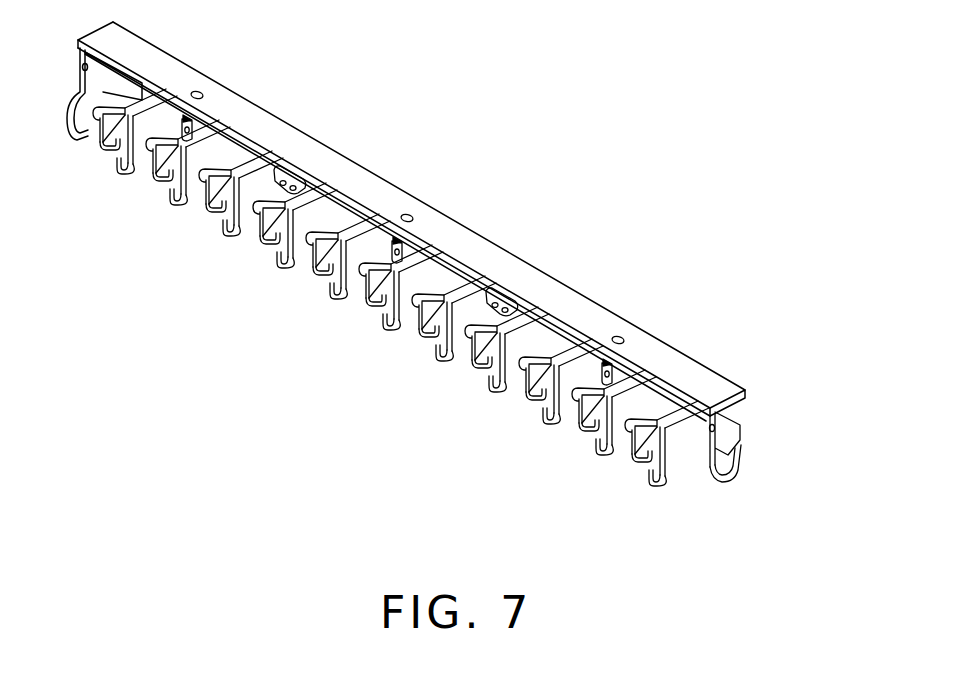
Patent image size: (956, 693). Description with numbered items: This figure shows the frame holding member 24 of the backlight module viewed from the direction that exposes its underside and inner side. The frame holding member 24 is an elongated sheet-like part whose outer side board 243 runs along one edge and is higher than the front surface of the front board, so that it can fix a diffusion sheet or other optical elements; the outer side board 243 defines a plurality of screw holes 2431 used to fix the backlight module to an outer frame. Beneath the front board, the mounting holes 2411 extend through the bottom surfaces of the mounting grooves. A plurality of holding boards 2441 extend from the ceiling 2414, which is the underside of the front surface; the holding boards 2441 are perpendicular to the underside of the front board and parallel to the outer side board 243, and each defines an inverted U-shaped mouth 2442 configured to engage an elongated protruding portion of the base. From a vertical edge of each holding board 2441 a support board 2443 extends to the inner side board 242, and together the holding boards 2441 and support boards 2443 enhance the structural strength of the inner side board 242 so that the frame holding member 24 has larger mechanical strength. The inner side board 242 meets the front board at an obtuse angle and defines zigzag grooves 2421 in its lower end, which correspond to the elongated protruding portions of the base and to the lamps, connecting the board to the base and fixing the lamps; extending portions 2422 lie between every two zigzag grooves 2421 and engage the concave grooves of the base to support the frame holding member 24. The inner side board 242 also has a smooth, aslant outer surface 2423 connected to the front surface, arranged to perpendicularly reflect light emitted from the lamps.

The frame holding member 24 is at (452, 267).
The inner side board 242 is at (465, 310).
The zigzag grooves 2421 is at (658, 458).
The extending portions 2422 is at (598, 420).
The outer surface 2423 is at (738, 453).
The outer side board 243 is at (576, 281).
The screw holes 2431 is at (205, 92).
The holding boards 2441 is at (355, 225).
The inverted U-shaped mouth 2442 is at (482, 340).
The support board 2443 is at (527, 385).
The mounting hole 2411 is at (303, 182).
The ceiling 2414 is at (212, 134).